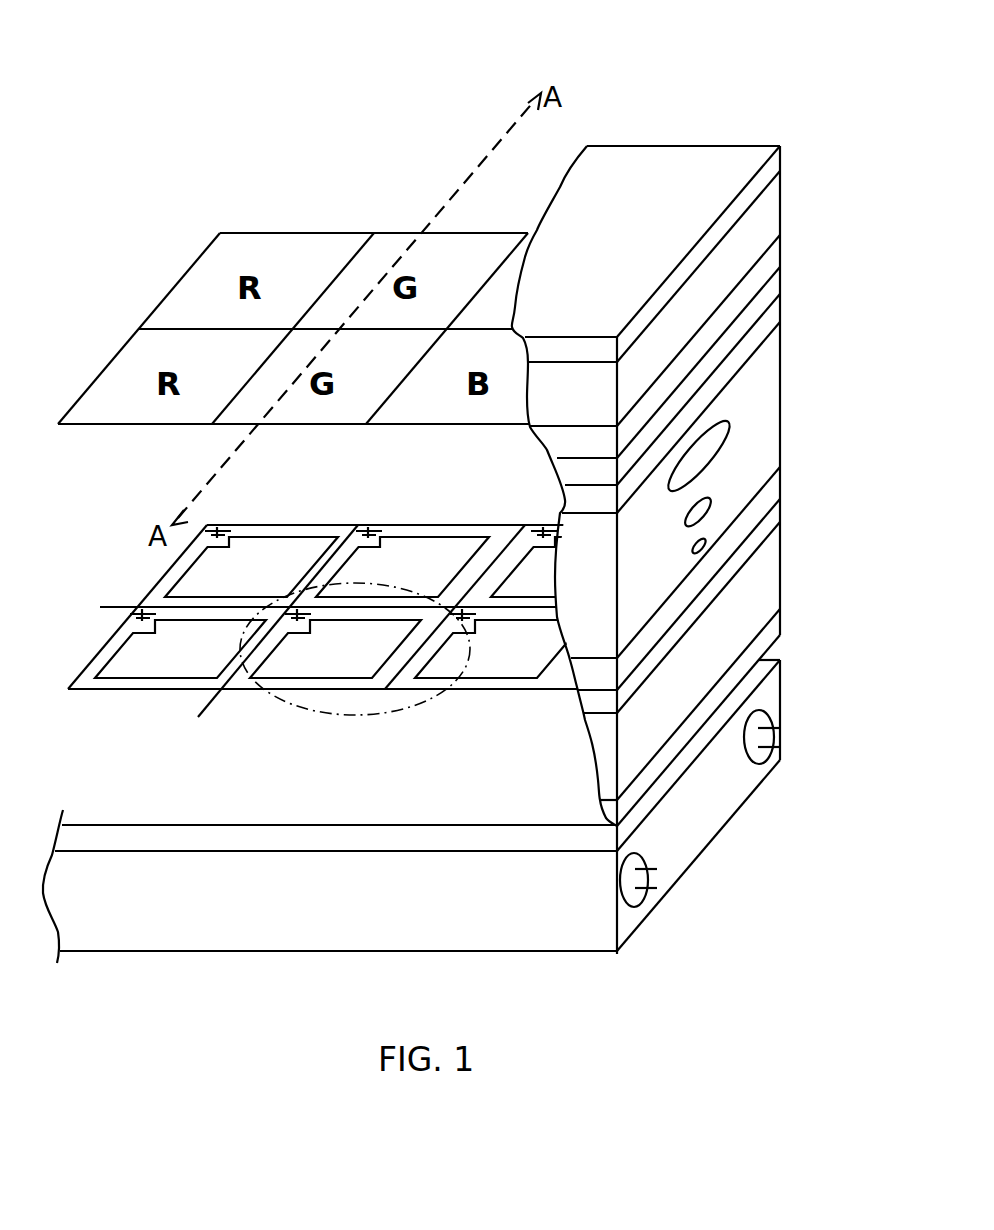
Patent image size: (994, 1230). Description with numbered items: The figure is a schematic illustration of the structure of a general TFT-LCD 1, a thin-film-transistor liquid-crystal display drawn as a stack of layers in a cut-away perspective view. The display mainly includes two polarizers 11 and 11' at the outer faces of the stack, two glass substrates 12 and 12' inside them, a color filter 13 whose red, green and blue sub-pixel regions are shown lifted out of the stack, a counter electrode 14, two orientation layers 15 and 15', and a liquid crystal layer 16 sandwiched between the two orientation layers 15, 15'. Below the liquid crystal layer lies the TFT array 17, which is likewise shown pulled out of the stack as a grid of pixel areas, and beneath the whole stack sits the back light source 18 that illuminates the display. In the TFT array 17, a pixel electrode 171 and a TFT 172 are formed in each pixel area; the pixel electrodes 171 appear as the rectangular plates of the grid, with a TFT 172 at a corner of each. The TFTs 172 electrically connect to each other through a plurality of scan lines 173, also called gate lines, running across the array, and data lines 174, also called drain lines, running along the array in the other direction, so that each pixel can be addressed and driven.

The TFT-LCD 1 is at (608, 105).
The polarizer 11 is at (686, 252).
The glass substrate 12 is at (689, 309).
The color filter 13 is at (782, 253).
The counter electrode 14 is at (782, 284).
The orientation layer 15 is at (705, 403).
The liquid crystal layer 16 is at (782, 408).
The orientation layer 15' is at (717, 578).
The TFT array 17 is at (782, 516).
The glass substrate 12' is at (728, 675).
The polarizer 11' is at (736, 715).
The back light source 18 is at (782, 697).
The pixel electrode 171 is at (345, 667).
The TFT 172 is at (283, 631).
The scan line 173 is at (108, 607).
The data line 174 is at (202, 712).